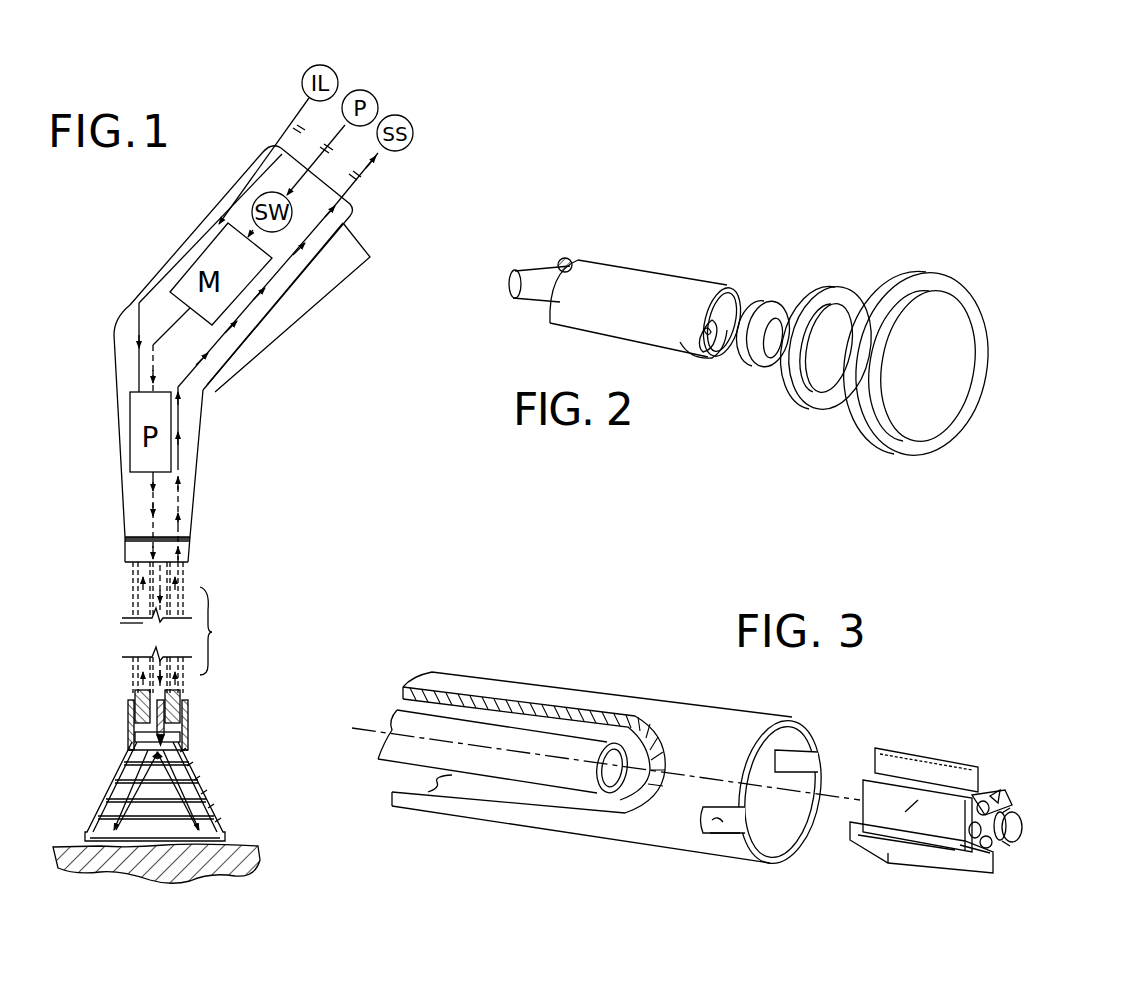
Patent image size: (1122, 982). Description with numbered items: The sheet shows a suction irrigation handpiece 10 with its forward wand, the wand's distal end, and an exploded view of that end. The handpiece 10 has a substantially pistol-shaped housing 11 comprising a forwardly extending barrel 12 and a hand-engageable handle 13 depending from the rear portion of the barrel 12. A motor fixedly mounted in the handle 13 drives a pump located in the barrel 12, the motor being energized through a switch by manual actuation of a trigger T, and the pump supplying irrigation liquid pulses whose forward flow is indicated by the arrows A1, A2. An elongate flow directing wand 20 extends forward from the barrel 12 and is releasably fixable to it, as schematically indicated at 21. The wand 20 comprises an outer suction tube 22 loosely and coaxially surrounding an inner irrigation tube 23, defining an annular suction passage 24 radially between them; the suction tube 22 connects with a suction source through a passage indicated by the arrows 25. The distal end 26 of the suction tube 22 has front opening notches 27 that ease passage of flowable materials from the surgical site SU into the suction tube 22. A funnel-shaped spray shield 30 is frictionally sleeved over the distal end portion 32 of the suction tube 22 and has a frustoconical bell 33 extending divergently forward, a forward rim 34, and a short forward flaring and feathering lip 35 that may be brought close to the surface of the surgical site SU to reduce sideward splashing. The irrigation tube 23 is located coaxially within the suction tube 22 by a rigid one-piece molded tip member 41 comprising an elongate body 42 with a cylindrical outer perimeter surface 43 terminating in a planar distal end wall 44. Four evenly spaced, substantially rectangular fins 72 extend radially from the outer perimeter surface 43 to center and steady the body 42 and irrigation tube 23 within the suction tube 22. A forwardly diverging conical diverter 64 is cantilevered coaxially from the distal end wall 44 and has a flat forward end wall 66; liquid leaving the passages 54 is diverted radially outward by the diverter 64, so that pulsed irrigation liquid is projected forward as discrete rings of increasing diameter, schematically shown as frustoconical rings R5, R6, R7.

In FIG. 1, the handpiece 10 is at (110, 236).
In FIG. 1, the housing 11 is at (124, 307).
In FIG. 1, the barrel 12 is at (123, 505).
In FIG. 1, the handle 13 is at (236, 186).
In FIG. 1, the flow directing wand 20 is at (132, 593).
In FIG. 2, the flow directing wand 20 is at (642, 262).
In FIG. 3, the flow directing wand 20 is at (537, 675).
In FIG. 1, the releasable fixing of wand 21 is at (128, 540).
In FIG. 1, the suction tube 22 is at (132, 605).
In FIG. 2, the suction tube 22 is at (602, 273).
In FIG. 3, the suction tube 22 is at (462, 680).
In FIG. 1, the irrigation tube 23 is at (137, 568).
In FIG. 2, the irrigation tube 23 is at (527, 283).
In FIG. 3, the irrigation tube 23 is at (397, 718).
In FIG. 1, the annular suction passage 24 is at (143, 623).
In FIG. 2, the annular suction passage 24 is at (562, 266).
In FIG. 3, the annular suction passage 24 is at (477, 792).
In FIG. 1, the suction passage arrows 25 is at (225, 330).
In FIG. 3, the distal end of suction tube 26 is at (793, 720).
In FIG. 3, the front opening notches 27 is at (713, 820).
In FIG. 1, the spray shield 30 is at (202, 766).
In FIG. 3, the distal end portion of suction tube 32 is at (733, 720).
In FIG. 1, the frustoconical bell 33 is at (205, 780).
In FIG. 1, the forward rim 34 is at (217, 817).
In FIG. 1, the lip 35 is at (224, 838).
In FIG. 1, the tip member 41 is at (200, 675).
In FIG. 3, the tip member 41 is at (948, 743).
In FIG. 3, the body 42 is at (917, 803).
In FIG. 3, the outer perimeter surface 43 is at (925, 812).
In FIG. 3, the distal end wall 44 is at (1012, 790).
In FIG. 3, the passages 54 is at (993, 792).
In FIG. 2, the conical diverter 64 is at (718, 355).
In FIG. 3, the conical diverter 64 is at (1020, 822).
In FIG. 3, the forward end wall 66 is at (1010, 832).
In FIG. 3, the fins 72 is at (963, 862).
In FIG. 1, the irrigation liquid flow arrow A1 is at (155, 507).
In FIG. 1, the irrigation liquid flow arrow A2 is at (148, 673).
In FIG. 1, the trigger T is at (333, 297).
In FIG. 1, the surgical site SU is at (66, 842).
In FIG. 2, the irrigation liquid ring R5 is at (780, 300).
In FIG. 2, the irrigation liquid ring R6 is at (847, 285).
In FIG. 2, the irrigation liquid ring R7 is at (910, 275).